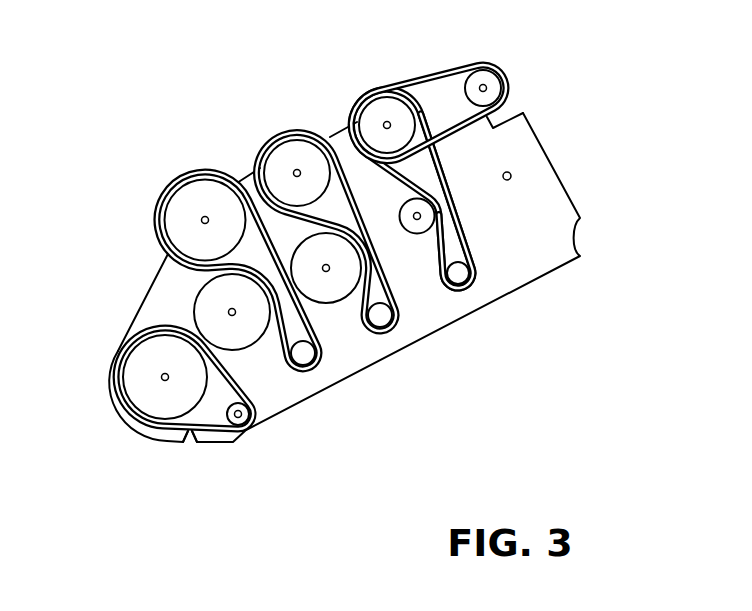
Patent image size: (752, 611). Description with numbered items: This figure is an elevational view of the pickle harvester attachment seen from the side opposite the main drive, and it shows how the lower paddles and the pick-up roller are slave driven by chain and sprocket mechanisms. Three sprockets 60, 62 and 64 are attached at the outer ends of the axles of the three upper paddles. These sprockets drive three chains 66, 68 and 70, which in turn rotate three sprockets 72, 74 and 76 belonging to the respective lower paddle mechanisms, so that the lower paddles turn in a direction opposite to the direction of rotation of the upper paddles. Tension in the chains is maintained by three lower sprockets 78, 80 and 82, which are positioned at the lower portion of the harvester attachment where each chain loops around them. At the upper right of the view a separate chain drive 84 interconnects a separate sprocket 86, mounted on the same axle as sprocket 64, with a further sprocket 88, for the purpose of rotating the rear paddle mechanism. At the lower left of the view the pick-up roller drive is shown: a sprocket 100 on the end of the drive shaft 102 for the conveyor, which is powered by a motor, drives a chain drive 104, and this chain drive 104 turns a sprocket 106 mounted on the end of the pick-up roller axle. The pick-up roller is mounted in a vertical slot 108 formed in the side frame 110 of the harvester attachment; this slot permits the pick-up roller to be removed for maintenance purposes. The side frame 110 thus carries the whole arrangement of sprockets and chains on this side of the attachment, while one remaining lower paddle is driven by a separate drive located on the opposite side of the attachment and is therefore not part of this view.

The sprocket 60 is at (207, 192).
The sprocket 62 is at (302, 153).
The sprocket 64 is at (386, 90).
The chain 66 is at (170, 185).
The chain 68 is at (283, 135).
The chain 70 is at (436, 168).
The sprocket 72 is at (205, 298).
The sprocket 74 is at (333, 287).
The sprocket 76 is at (420, 227).
The lower sprocket 78 is at (305, 355).
The lower sprocket 80 is at (383, 320).
The lower sprocket 82 is at (460, 278).
The separate chain drive 84 is at (442, 73).
The separate sprocket 86 is at (373, 110).
The sprocket 88 is at (492, 77).
The sprocket 100 is at (241, 424).
The drive shaft 102 is at (232, 428).
The chain drive 104 is at (173, 432).
The sprocket 106 is at (140, 398).
The vertical slot 108 is at (187, 442).
The side frame 110 is at (552, 203).